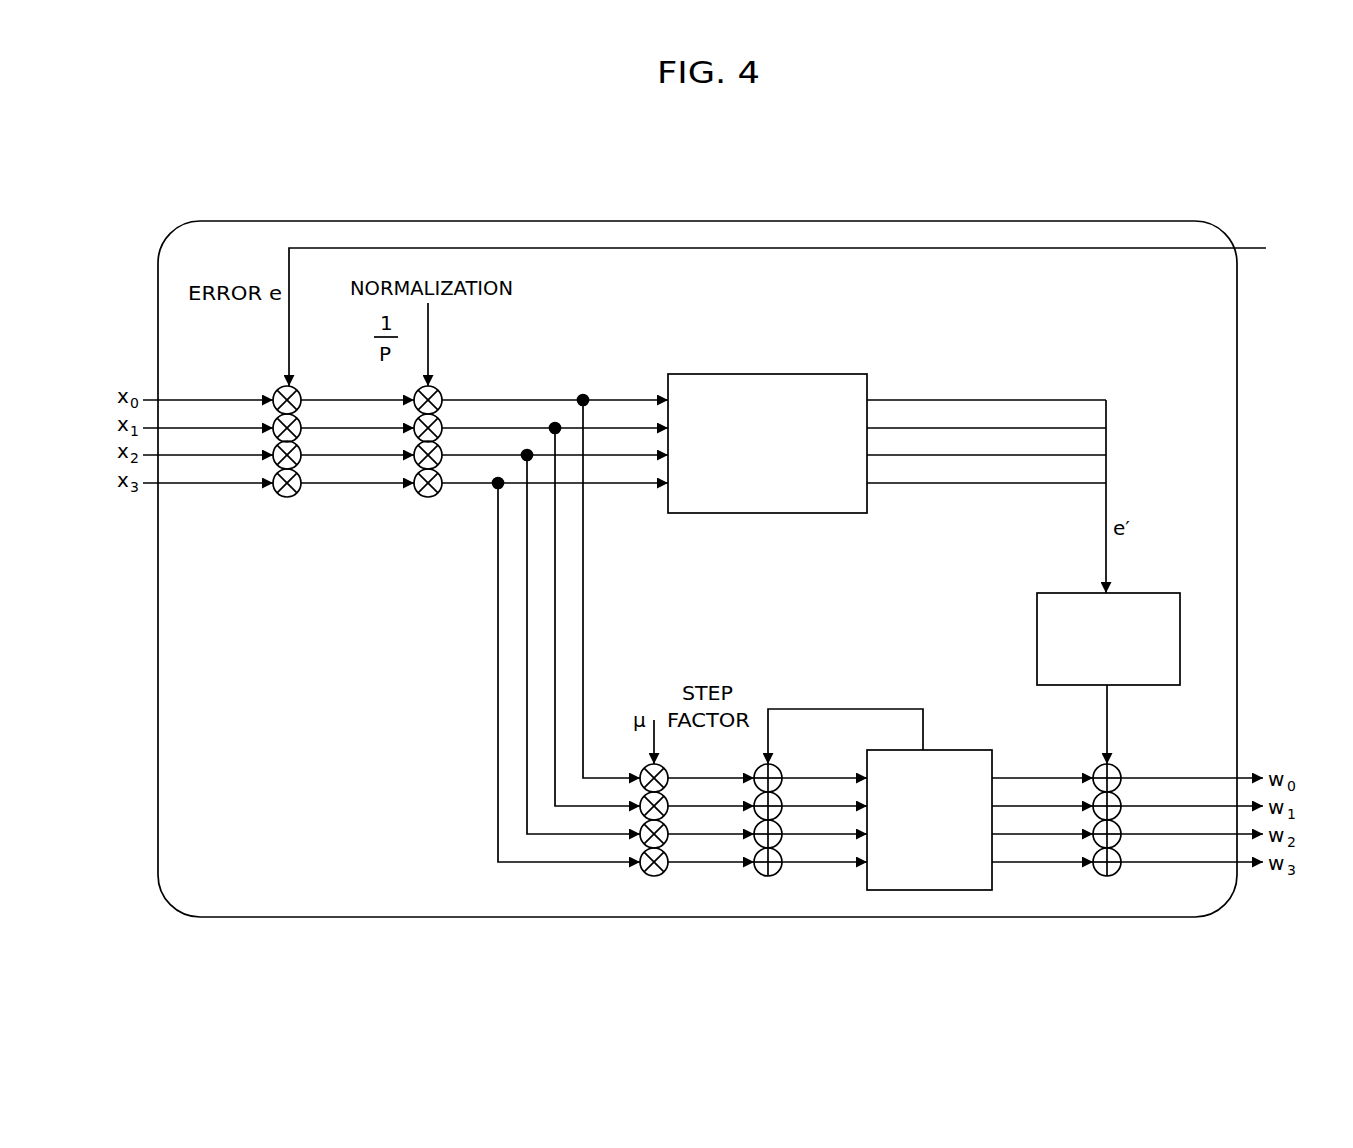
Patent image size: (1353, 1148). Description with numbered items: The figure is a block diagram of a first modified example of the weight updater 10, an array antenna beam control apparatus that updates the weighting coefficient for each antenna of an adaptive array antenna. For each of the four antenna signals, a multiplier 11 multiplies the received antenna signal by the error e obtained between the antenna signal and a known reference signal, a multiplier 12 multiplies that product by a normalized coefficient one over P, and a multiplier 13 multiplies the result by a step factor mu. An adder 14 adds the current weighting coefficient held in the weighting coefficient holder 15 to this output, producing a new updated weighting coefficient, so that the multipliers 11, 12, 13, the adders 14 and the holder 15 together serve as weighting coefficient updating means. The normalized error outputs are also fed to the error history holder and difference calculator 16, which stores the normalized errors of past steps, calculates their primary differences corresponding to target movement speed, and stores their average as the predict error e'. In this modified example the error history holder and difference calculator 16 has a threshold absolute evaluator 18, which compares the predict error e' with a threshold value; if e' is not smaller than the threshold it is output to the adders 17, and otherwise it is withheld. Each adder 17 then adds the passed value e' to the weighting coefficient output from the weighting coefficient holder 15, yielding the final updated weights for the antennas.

The weight updater 10 is at (685, 221).
The multiplier 11 is at (273, 420).
The multiplier 12 is at (443, 415).
The multiplier 13 is at (666, 790).
The adder 14 is at (780, 790).
The weighting coefficient holder 15 is at (938, 750).
The error history holder and difference calculator 16 is at (763, 374).
The adder 17 is at (1119, 790).
The threshold absolute evaluator 18 is at (1037, 625).